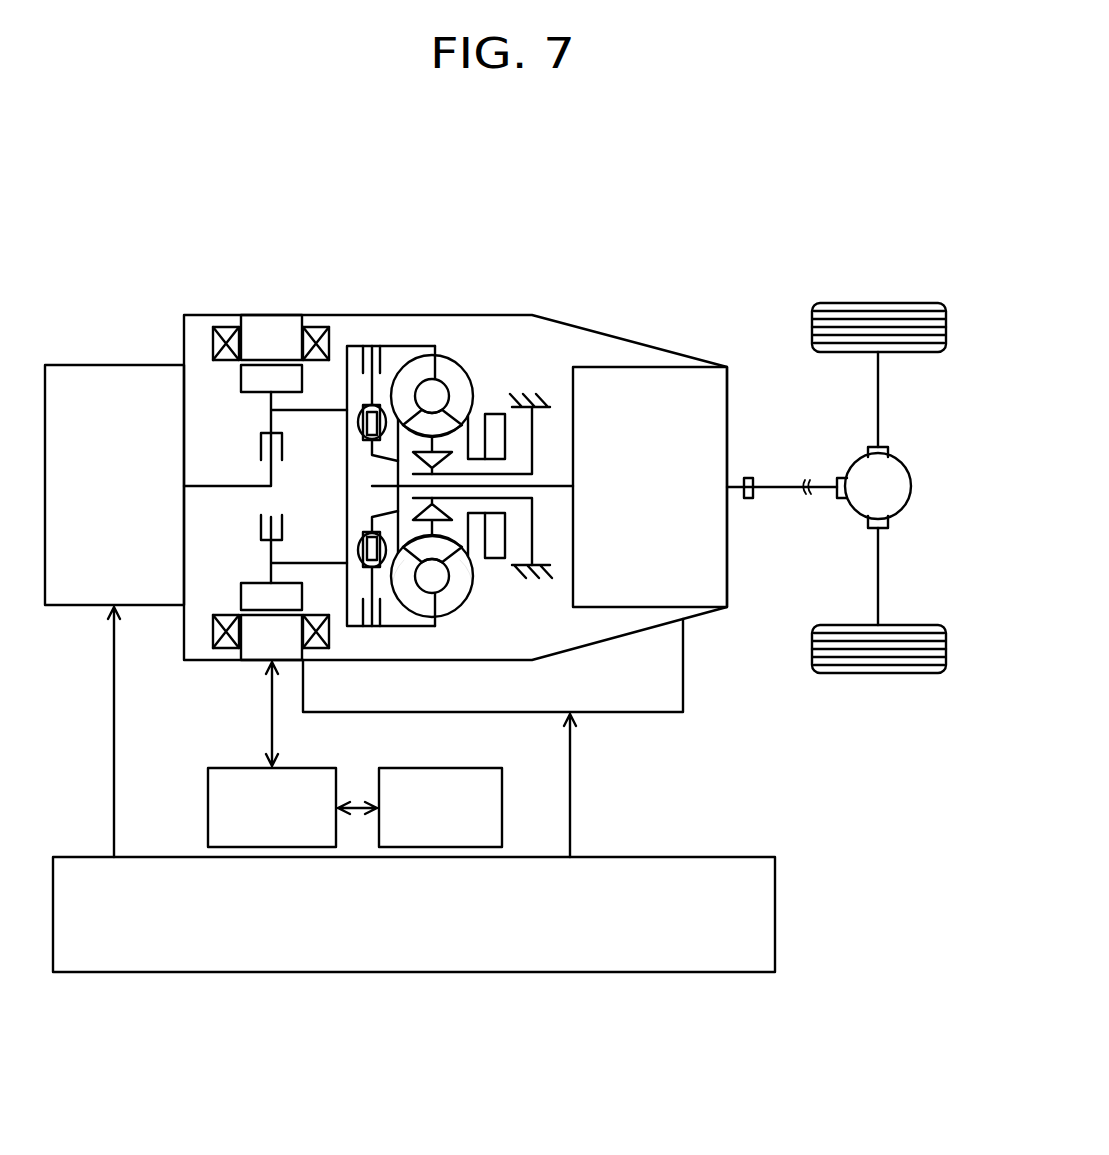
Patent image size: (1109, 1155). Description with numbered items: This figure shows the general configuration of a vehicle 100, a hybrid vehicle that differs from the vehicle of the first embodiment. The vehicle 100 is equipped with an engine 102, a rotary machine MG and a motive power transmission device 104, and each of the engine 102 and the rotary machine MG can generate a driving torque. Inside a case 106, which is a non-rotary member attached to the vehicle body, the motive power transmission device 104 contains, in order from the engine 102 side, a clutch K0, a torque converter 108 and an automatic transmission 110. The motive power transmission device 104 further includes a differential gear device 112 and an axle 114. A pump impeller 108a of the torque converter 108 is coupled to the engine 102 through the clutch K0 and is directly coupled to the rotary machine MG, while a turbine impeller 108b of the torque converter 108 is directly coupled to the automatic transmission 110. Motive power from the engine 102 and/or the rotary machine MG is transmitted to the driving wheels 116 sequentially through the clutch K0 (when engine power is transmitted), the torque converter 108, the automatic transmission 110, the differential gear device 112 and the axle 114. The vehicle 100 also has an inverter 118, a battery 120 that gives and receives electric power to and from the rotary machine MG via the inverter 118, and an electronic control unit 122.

The vehicle 100 is at (655, 216).
The engine 102 is at (73, 373).
The motive power transmission device 104 is at (446, 267).
The case 106 is at (468, 312).
The torque converter 108 is at (467, 359).
The pump impeller 108a is at (455, 598).
The turbine impeller 108b is at (410, 594).
The automatic transmission 110 is at (710, 427).
The differential gear device 112 is at (893, 470).
The axle 114 is at (878, 400).
The driving wheels 116 is at (812, 325).
The inverter 118 is at (290, 767).
The battery 120 is at (460, 767).
The electronic control unit 122 is at (710, 857).
The clutch K0 is at (282, 527).